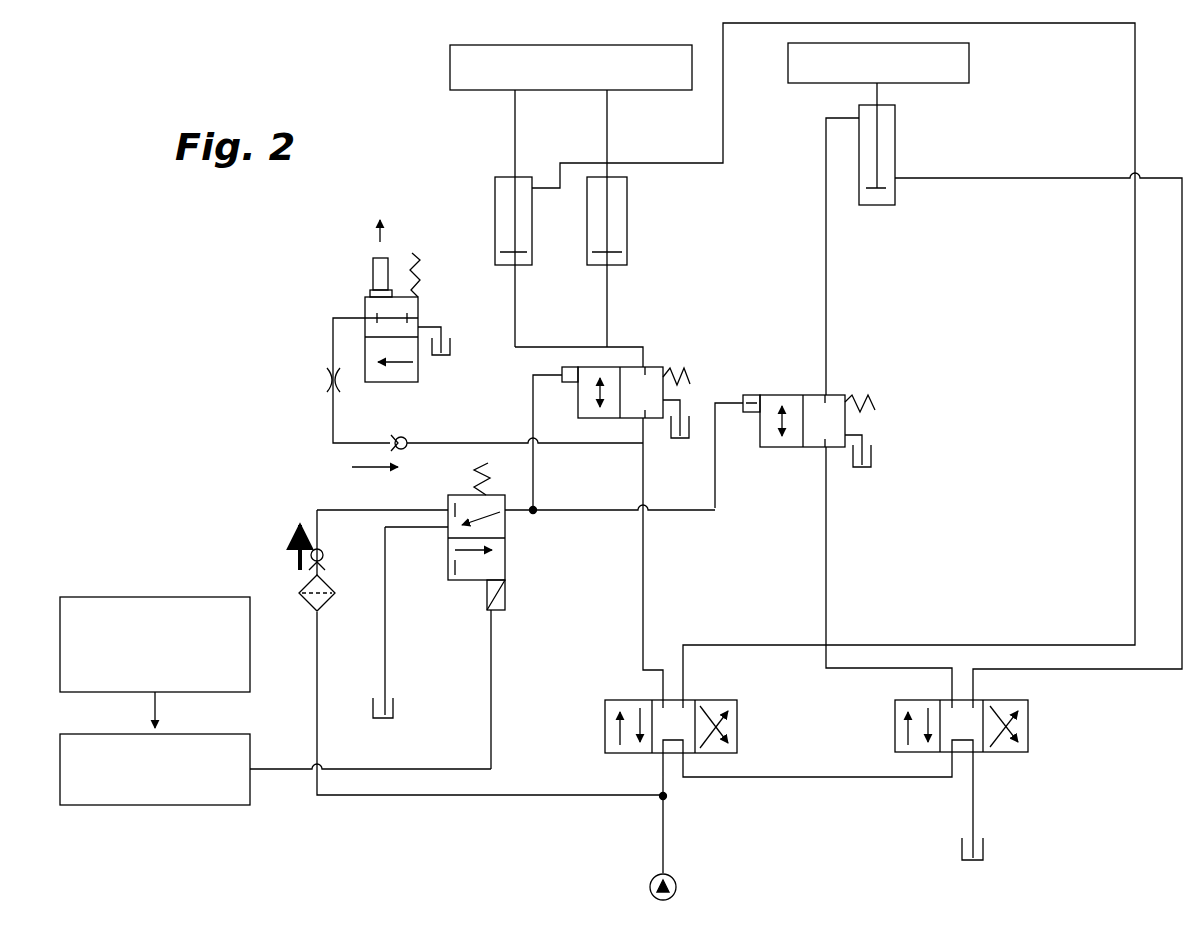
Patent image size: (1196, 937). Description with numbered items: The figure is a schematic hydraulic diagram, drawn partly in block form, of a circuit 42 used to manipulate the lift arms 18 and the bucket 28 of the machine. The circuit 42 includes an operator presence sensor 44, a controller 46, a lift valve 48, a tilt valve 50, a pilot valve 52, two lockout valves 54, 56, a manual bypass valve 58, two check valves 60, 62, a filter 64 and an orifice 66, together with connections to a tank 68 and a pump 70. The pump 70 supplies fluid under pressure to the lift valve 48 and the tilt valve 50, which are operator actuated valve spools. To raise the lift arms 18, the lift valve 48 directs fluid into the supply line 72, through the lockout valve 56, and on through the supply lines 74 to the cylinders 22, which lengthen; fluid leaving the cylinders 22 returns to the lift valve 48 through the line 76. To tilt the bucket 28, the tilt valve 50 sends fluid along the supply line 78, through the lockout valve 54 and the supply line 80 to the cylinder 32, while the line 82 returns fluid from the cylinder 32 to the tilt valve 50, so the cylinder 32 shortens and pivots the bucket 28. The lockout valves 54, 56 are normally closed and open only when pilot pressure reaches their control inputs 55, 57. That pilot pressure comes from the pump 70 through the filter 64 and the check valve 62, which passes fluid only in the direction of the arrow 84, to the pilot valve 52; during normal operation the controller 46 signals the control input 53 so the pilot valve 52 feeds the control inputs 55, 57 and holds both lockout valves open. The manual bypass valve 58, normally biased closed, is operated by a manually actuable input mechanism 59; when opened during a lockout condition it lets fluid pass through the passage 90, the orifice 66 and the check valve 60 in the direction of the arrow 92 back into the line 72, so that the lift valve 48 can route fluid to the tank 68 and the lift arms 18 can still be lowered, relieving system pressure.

The lift arms 18 is at (571, 67).
The cylinders 22 is at (532, 254).
The bucket 28 is at (878, 63).
The cylinder 32 is at (895, 130).
The circuit 42 is at (262, 236).
The operator presence sensor 44 is at (250, 672).
The controller 46 is at (250, 750).
The lift valve 48 is at (737, 718).
The tilt valve 50 is at (1028, 722).
The pilot valve 52 is at (505, 567).
The control input 53 is at (505, 600).
The lockout valve 54 is at (835, 395).
The control input 55 is at (747, 395).
The lockout valve 56 is at (660, 367).
The control input 57 is at (560, 372).
The manual bypass valve 58 is at (418, 302).
The manually actuable input mechanism 59 is at (373, 268).
The checkvalve 60 is at (396, 437).
The checkvalve 62 is at (309, 563).
The filter 64 is at (322, 610).
The orifice 66 is at (322, 380).
The tank 68 is at (441, 358).
The pump 70 is at (676, 878).
The supply line 72 is at (645, 550).
The supply lines 74 is at (607, 326).
The line 76 is at (725, 148).
The supply line 78 is at (826, 558).
The supply line 80 is at (826, 293).
The line 82 is at (1020, 178).
The arrow 84 is at (300, 520).
The passage 90 is at (333, 327).
The arrow 92 is at (357, 467).